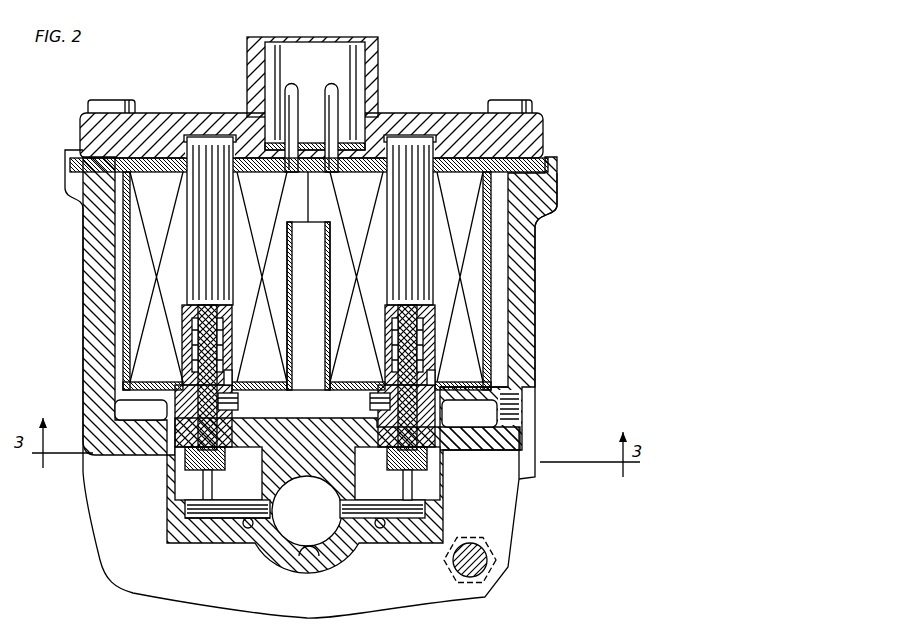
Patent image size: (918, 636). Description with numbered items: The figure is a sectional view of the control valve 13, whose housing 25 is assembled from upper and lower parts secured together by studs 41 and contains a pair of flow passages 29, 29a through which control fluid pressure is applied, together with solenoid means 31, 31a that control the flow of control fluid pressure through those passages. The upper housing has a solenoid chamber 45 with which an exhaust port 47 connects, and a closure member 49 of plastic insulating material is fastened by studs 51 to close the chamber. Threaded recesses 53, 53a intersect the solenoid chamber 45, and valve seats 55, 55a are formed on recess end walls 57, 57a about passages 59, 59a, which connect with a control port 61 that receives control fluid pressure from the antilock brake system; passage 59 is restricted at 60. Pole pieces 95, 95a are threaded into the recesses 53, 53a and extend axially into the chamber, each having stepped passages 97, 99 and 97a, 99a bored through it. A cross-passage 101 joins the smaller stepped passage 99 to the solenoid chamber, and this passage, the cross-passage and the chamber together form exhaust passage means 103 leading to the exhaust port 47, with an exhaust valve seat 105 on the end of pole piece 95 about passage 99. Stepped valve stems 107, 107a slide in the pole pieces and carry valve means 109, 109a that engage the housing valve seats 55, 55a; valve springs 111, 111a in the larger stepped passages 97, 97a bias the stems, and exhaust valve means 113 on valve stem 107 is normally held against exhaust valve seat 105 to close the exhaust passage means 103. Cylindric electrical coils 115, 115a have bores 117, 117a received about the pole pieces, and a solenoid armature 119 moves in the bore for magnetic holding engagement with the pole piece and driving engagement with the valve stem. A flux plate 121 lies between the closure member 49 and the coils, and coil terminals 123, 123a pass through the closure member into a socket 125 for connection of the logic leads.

The control valve 13 is at (557, 117).
The housing 25 is at (543, 447).
The flow passage 29 is at (211, 535).
The flow passage 29a is at (398, 532).
The solenoid means 31 is at (164, 200).
The solenoid means 31a is at (477, 203).
The stud 41 is at (498, 563).
The solenoid chamber 45 is at (497, 230).
The exhaust port 47 is at (522, 410).
The closure member 49 is at (423, 122).
The stud 51 is at (509, 101).
The threaded recess 53 is at (167, 413).
The threaded recess 53a is at (443, 418).
The valve seat 55 is at (185, 501).
The valve seat 55a is at (426, 476).
The recess end wall 57 is at (200, 518).
The recess end wall 57a is at (420, 487).
The passage 59 is at (244, 526).
The passage 59a is at (382, 528).
The restriction 60 is at (307, 511).
The control port 61 is at (308, 552).
The pole piece 95 is at (228, 317).
The pole piece 95a is at (387, 308).
The larger stepped passage 97 is at (218, 343).
The larger stepped passage 97a is at (423, 343).
The smaller stepped passage 99 is at (228, 375).
The smaller stepped passage 99a is at (436, 375).
The cross-passage 101 is at (239, 397).
The exhaust passage means 103 is at (505, 384).
The exhaust valve seat 105 is at (187, 450).
The stepped valve stem 107 is at (187, 363).
The stepped valve stem 107a is at (393, 367).
The valve means 109 is at (196, 469).
The valve means 109a is at (370, 405).
The valve spring 111 is at (187, 347).
The valve spring 111a is at (397, 340).
The exhaust valve means 113 is at (300, 389).
The electrical coil 115 is at (147, 268).
The electrical coil 115a is at (470, 268).
The bore 117 is at (235, 198).
The bore 117a is at (395, 197).
The solenoid armature 119 is at (200, 227).
The flux plate 121 is at (546, 176).
The terminal 123 is at (291, 83).
The terminal 123a is at (331, 83).
The socket 125 is at (378, 60).